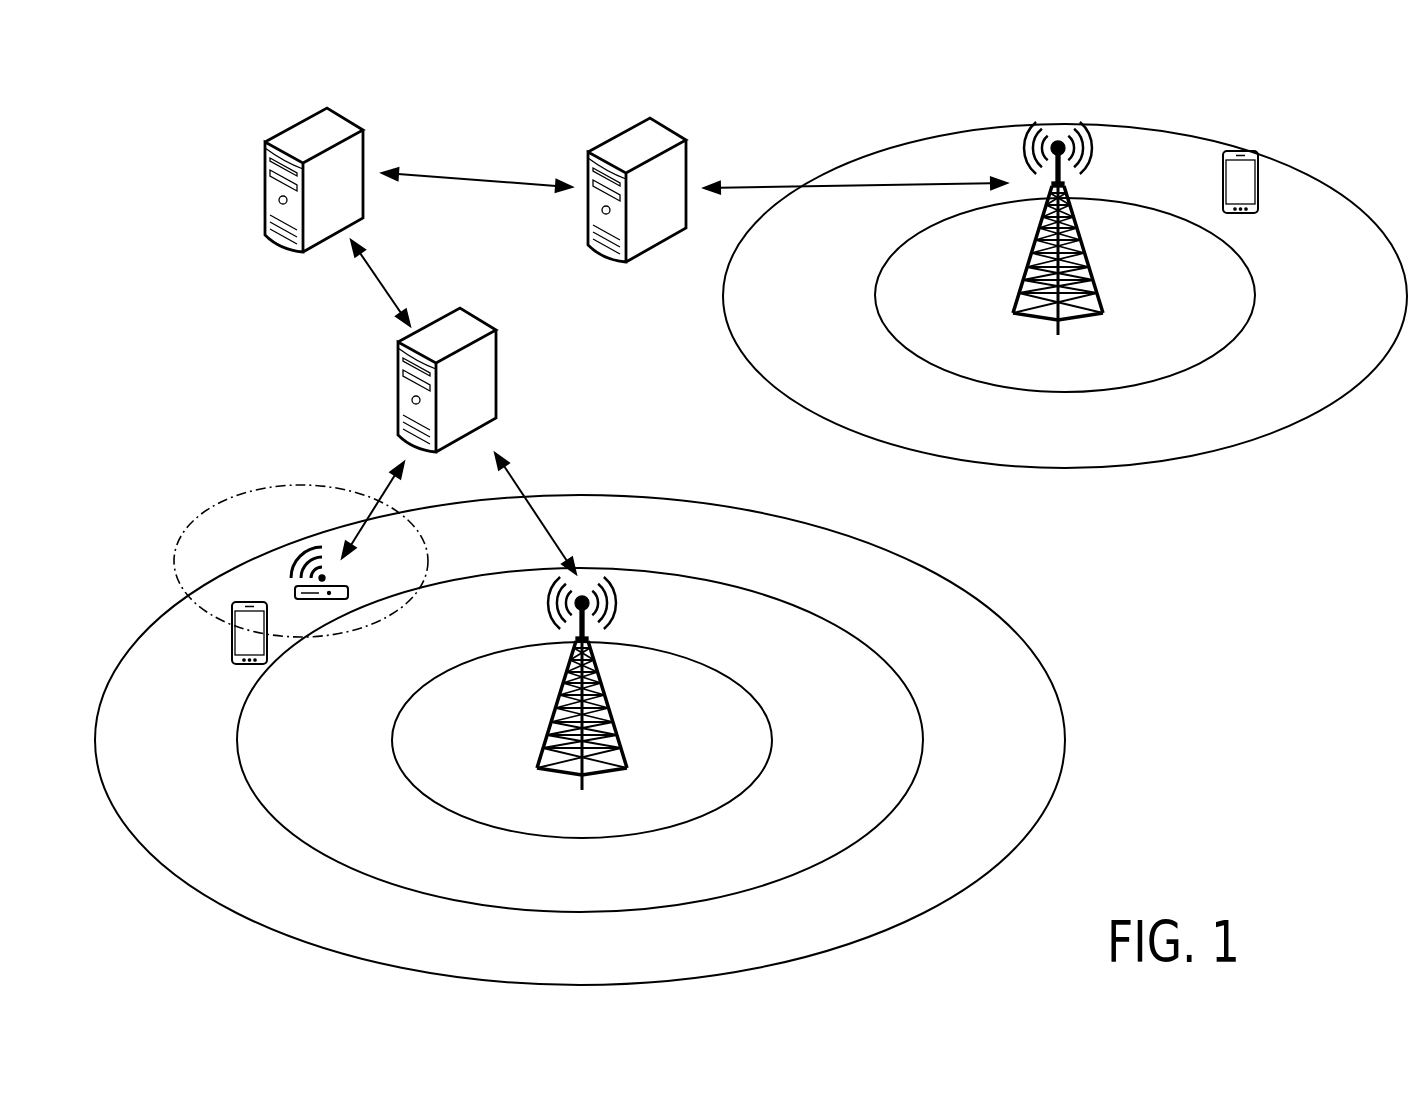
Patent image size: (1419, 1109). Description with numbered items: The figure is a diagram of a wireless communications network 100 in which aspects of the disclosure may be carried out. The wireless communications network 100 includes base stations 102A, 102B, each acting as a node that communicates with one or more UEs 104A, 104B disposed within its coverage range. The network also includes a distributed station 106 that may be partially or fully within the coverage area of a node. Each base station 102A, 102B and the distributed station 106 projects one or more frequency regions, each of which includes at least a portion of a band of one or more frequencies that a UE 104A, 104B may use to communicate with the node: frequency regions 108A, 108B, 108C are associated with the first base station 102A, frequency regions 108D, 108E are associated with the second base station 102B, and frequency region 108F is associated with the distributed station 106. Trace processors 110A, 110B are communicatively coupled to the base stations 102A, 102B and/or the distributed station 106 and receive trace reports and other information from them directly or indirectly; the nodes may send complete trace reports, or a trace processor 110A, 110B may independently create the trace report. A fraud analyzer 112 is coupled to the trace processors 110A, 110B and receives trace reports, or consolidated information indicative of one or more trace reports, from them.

The wireless communications network 100 is at (181, 343).
The base station 102A is at (548, 600).
The base station 102B is at (1023, 145).
The UE 104A is at (273, 647).
The UE 104B is at (1257, 163).
The distributed station 106 is at (303, 551).
The frequency region 108A is at (592, 815).
The frequency region 108B is at (622, 887).
The frequency region 108C is at (652, 959).
The frequency region 108D is at (1085, 367).
The frequency region 108E is at (1107, 442).
The frequency region 108F is at (186, 560).
The trace processor 110A is at (445, 314).
The trace processor 110B is at (635, 124).
The fraud analyzer 112 is at (312, 114).